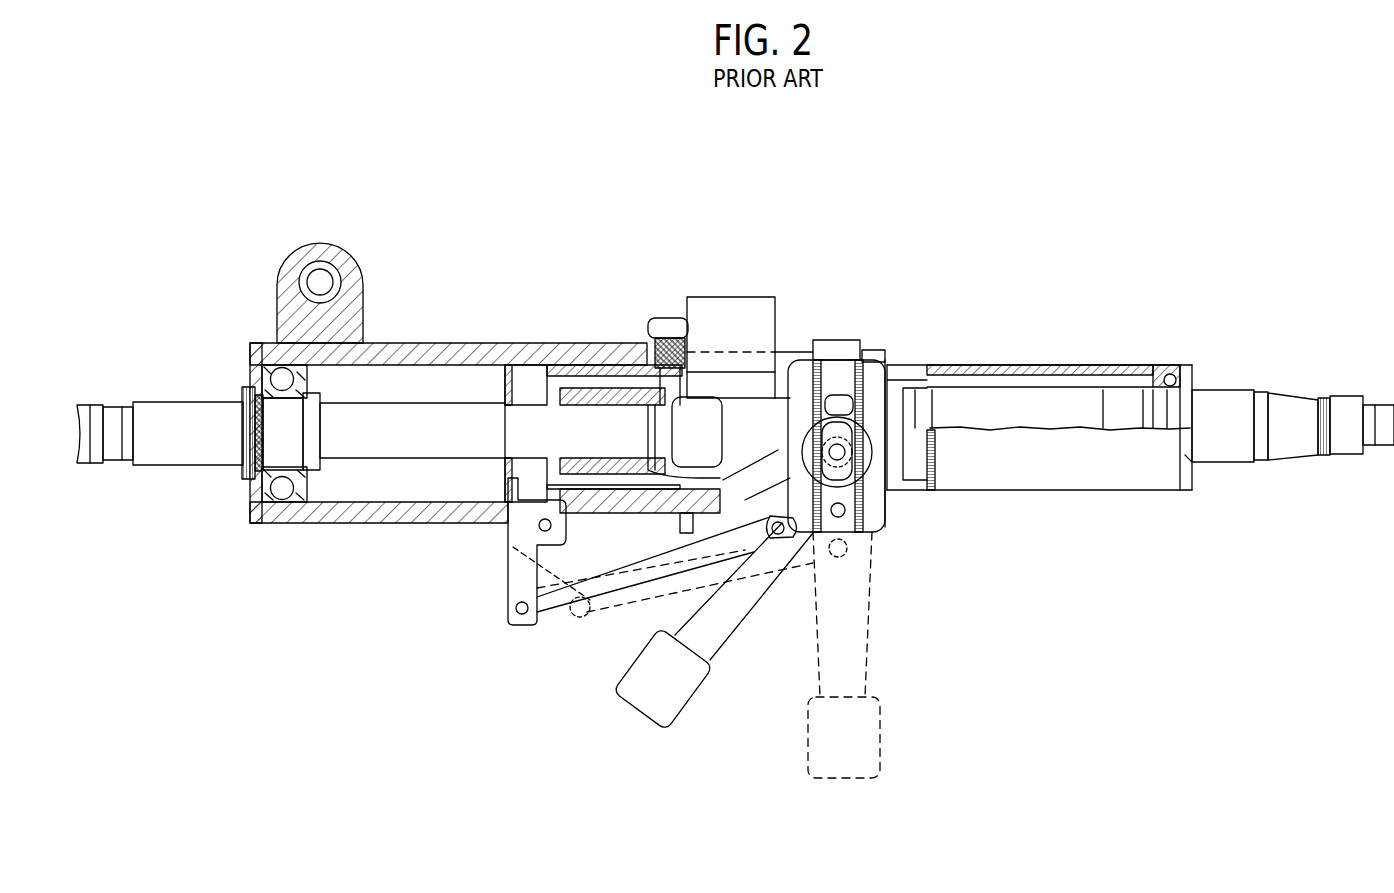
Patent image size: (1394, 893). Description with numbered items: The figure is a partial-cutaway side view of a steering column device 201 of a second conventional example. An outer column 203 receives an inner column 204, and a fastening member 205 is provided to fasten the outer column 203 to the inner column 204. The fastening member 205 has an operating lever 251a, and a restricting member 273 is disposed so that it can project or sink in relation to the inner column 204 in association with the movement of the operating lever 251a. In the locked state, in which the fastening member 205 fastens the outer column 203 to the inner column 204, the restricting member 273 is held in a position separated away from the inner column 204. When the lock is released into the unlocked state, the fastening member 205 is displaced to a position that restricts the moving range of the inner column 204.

The steering column device 201 is at (1002, 160).
The outer column 203 is at (420, 343).
The inner column 204 is at (995, 363).
The fastening member 205 is at (918, 512).
The restricting member 273 is at (507, 520).
The operating lever 251a is at (707, 628).